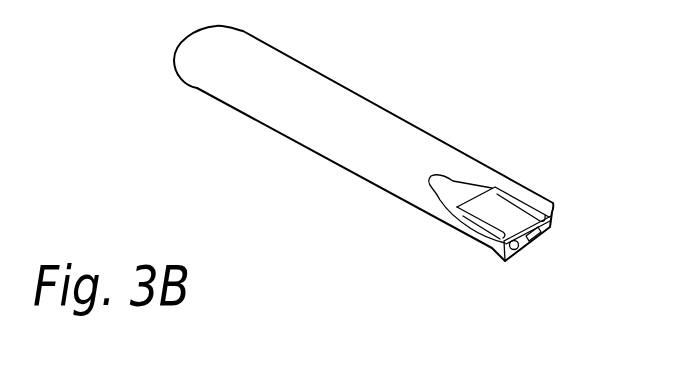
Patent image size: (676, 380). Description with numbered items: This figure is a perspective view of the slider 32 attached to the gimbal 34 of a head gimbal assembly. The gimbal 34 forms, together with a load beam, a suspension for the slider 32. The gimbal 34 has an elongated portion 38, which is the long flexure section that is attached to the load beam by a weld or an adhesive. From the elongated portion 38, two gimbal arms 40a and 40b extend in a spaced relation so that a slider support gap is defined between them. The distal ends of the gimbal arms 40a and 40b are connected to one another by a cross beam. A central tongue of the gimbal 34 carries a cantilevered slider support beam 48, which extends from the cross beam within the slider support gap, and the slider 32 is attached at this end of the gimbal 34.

The gimbal 34 is at (314, 68).
The elongated portion 38 is at (266, 125).
The slider 32 is at (496, 257).
The gimbal arm 40a is at (525, 188).
The gimbal arm 40b is at (437, 221).
The cantilevered slider support beam 48 is at (495, 213).